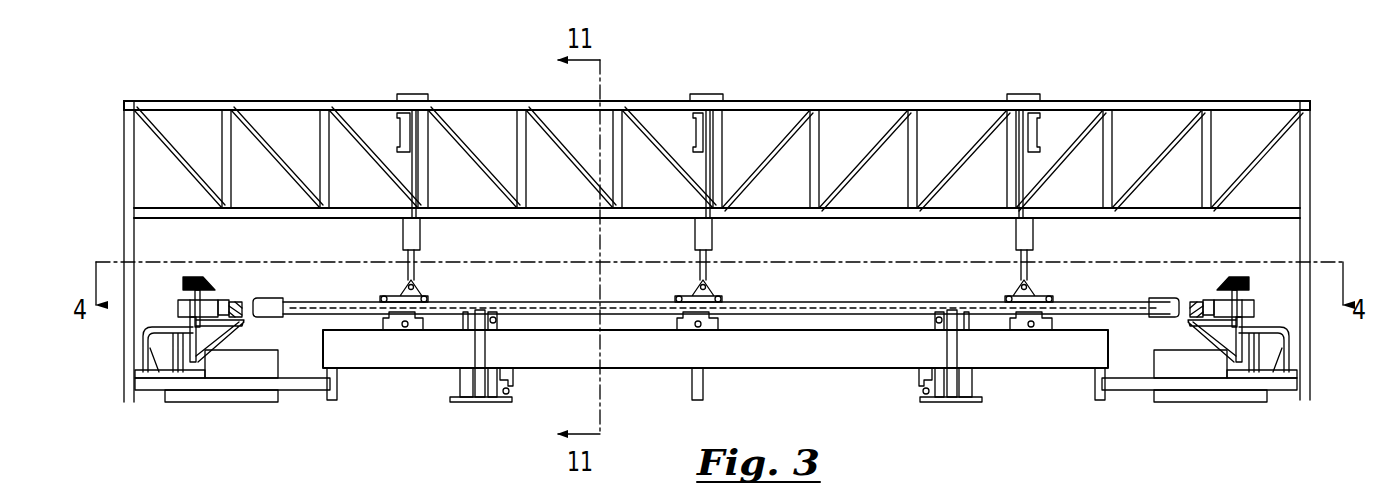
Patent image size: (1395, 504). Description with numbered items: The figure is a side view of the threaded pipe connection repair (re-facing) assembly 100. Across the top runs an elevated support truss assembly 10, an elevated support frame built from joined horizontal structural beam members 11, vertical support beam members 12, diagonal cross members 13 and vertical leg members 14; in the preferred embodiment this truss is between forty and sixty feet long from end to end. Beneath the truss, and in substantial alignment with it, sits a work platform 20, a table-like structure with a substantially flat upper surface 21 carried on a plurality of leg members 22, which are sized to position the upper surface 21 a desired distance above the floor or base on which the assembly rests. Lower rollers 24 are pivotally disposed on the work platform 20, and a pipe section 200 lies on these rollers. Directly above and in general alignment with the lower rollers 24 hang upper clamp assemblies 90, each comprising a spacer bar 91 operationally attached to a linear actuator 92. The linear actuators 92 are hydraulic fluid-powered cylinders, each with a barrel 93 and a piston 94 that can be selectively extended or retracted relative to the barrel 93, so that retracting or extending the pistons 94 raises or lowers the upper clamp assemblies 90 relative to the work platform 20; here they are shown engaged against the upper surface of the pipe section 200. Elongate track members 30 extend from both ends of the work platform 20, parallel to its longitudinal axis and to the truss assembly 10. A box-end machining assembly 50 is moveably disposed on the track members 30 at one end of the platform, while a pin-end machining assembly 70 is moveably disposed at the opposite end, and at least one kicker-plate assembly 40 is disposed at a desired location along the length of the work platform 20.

The threaded pipe connection repair (re-facing) assembly 100 is at (899, 80).
The elevated support truss assembly 10 is at (1201, 95).
The horizontal structural beam members 11 is at (272, 100).
The vertical support beam members 12 is at (226, 126).
The diagonal cross members 13 is at (186, 130).
The vertical leg members 14 is at (123, 229).
The work platform 20 is at (783, 363).
The upper surface 21 is at (872, 330).
The leg members 22 is at (338, 381).
The lower rollers 24 is at (406, 312).
The track members 30 is at (291, 391).
The kicker-plate assembly 40 is at (500, 322).
The box-end machining assembly 50 is at (170, 319).
The pin-end machining assembly 70 is at (1262, 319).
The upper clamp assemblies 90 is at (387, 284).
The spacer bars 91 is at (416, 262).
The linear actuators 92 is at (411, 152).
The barrel 93 is at (396, 129).
The piston 94 is at (418, 166).
The pipe section 200 is at (567, 301).